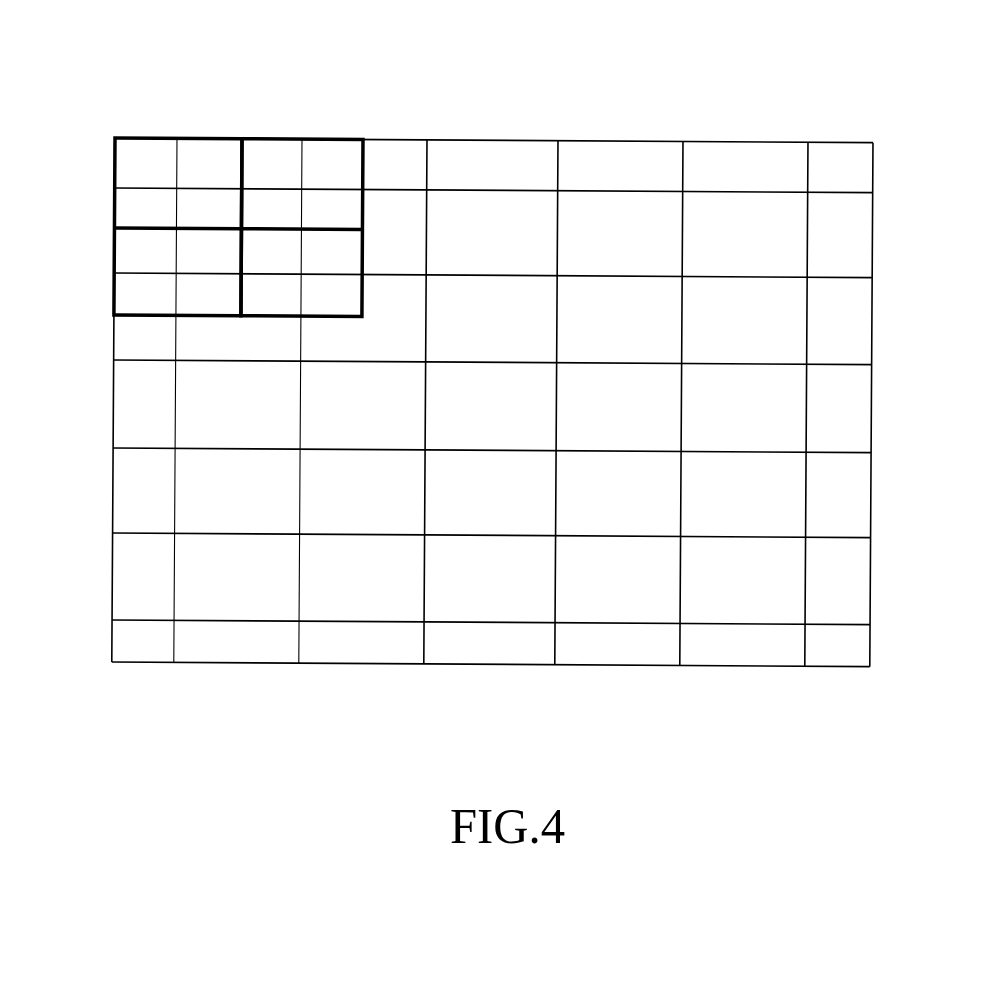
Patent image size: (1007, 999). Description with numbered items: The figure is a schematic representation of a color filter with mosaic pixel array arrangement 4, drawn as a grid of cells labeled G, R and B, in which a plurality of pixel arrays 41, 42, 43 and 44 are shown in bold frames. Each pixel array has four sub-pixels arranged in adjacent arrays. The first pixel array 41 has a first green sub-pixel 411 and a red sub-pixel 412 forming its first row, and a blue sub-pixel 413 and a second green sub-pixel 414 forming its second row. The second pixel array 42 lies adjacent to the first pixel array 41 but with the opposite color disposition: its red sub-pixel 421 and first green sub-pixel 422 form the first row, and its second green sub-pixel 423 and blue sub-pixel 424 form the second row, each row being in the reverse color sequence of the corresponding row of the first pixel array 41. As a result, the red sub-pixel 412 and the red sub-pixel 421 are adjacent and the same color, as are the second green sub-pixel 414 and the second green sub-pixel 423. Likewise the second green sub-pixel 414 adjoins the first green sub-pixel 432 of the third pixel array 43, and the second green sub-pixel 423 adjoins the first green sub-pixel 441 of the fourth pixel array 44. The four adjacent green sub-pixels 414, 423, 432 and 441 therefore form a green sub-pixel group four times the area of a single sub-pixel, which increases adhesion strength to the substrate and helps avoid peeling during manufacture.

The color filter with mosaic pixel array arrangement 4 is at (721, 84).
The first pixel array 41 is at (145, 161).
The first green sub-pixel 411 is at (133, 150).
The red sub-pixel 412 is at (192, 147).
The blue sub-pixel 413 is at (168, 193).
The second green sub-pixel 414 is at (232, 193).
The second pixel array 42 is at (333, 158).
The red sub-pixel 421 is at (257, 147).
The first green sub-pixel 422 is at (318, 147).
The second green sub-pixel 423 is at (295, 193).
The blue sub-pixel 424 is at (352, 192).
The third pixel array 43 is at (109, 327).
The first green sub-pixel 432 is at (187, 242).
The fourth pixel array 44 is at (243, 339).
The first green sub-pixel 441 is at (255, 267).